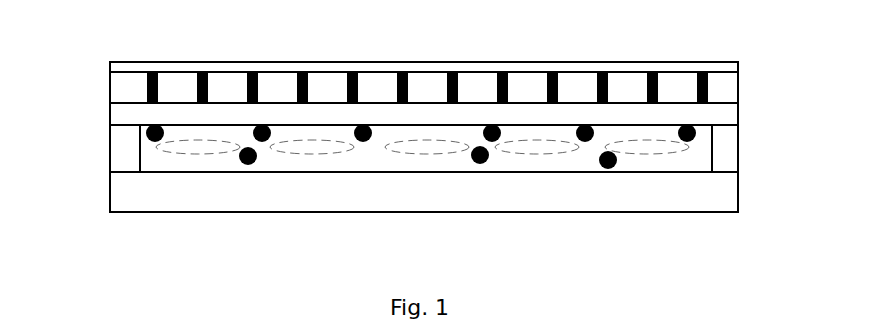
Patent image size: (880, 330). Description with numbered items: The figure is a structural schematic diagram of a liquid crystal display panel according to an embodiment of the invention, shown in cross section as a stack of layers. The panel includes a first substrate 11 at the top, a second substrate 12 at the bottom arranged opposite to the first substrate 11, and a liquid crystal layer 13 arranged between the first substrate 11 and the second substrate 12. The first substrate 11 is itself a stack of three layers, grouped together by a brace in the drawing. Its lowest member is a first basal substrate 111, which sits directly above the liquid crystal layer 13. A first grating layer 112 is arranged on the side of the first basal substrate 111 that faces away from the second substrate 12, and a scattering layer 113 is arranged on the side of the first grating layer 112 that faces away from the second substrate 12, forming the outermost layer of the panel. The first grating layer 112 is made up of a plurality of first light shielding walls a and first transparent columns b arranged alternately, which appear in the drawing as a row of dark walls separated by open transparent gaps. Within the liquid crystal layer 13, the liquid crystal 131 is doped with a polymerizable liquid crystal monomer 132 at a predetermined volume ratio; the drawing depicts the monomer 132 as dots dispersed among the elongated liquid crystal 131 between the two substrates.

The first substrate 11 is at (424, 77).
The first basal substrate 111 is at (125, 118).
The first grating layer 112 is at (390, 66).
The scattering layer 113 is at (125, 67).
The first light shielding wall a is at (598, 73).
The first transparent column b is at (380, 83).
The second substrate 12 is at (723, 207).
The liquid crystal layer 13 is at (456, 193).
The liquid crystal 131 is at (308, 150).
The polymerizable liquid crystal monomer 132 is at (472, 152).